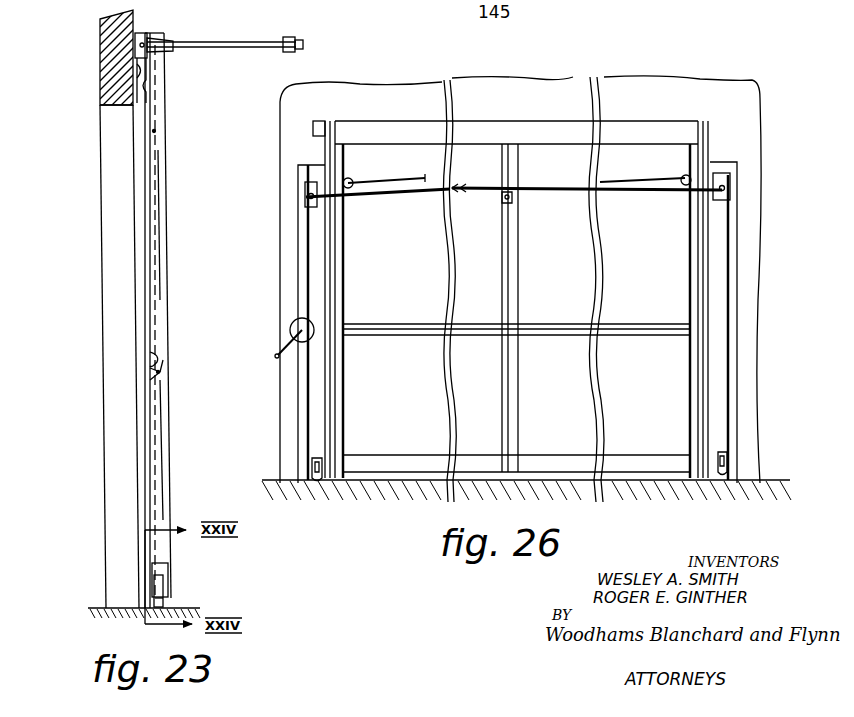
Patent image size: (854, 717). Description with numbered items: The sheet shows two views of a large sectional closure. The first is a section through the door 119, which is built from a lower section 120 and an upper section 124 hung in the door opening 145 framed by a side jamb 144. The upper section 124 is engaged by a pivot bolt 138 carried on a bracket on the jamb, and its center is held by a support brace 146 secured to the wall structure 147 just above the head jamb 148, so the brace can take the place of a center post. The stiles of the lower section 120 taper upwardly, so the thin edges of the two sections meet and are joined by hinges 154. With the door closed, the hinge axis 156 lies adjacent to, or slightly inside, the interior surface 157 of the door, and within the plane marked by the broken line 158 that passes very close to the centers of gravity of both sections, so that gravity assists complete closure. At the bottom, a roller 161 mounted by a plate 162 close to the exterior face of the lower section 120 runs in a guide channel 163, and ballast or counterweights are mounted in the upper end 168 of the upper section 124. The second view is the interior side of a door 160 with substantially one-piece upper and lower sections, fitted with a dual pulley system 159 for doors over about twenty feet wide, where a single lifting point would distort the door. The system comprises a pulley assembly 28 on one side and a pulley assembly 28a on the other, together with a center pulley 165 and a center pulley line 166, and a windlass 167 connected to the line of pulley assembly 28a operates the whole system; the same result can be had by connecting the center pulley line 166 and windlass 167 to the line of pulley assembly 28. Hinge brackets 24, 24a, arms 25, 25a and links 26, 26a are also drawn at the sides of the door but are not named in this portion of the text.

In FIG. 26, the hinge bracket 24 is at (731, 200).
In FIG. 26, the hinge bracket 24a is at (306, 200).
In FIG. 26, the arm 25 is at (353, 184).
In FIG. 26, the arm 25a is at (682, 180).
In FIG. 26, the link arm 26 is at (625, 190).
In FIG. 26, the link arm 26a is at (383, 197).
In FIG. 26, the pulley assembly 28 is at (736, 243).
In FIG. 26, the pulley assembly 28a is at (307, 268).
In FIG. 23, the door 119 is at (195, 320).
In FIG. 23, the lower section 120 is at (166, 452).
In FIG. 23, the upper section 124 is at (164, 212).
In FIG. 23, the pivot bolt 138 is at (155, 130).
In FIG. 23, the side jamb 144 is at (101, 135).
In FIG. 23, the door opening 145 is at (115, 185).
In FIG. 23, the support brace 146 is at (141, 90).
In FIG. 23, the wall structure 147 is at (105, 44).
In FIG. 23, the head jamb 148 is at (100, 101).
In FIG. 23, the hinge 154 is at (158, 360).
In FIG. 23, the hinge axis 156 is at (160, 372).
In FIG. 23, the interior surface 157 is at (165, 170).
In FIG. 23, the broken line 158 is at (157, 94).
In FIG. 26, the dual pulley system 159 is at (405, 165).
In FIG. 26, the door 160 is at (690, 105).
In FIG. 23, the roller 161 is at (164, 600).
In FIG. 23, the plate 162 is at (166, 572).
In FIG. 23, the guide channel 163 is at (153, 582).
In FIG. 26, the center pulley 165 is at (514, 201).
In FIG. 26, the center pulley line 166 is at (513, 313).
In FIG. 26, the windlass 167 is at (291, 328).
In FIG. 23, the upper end 168 is at (163, 37).